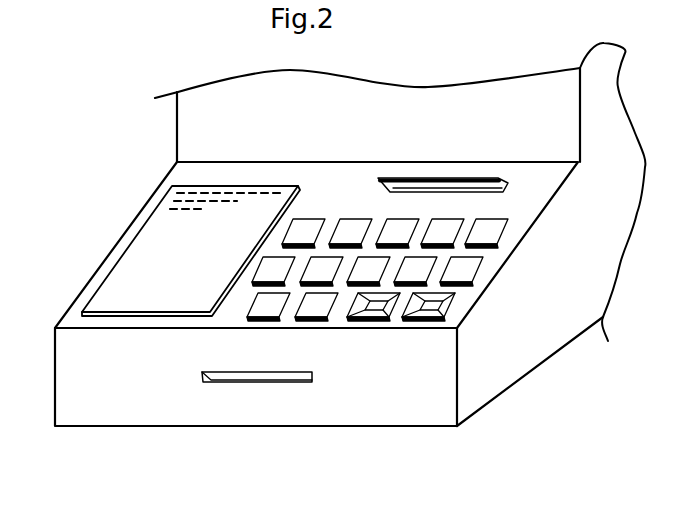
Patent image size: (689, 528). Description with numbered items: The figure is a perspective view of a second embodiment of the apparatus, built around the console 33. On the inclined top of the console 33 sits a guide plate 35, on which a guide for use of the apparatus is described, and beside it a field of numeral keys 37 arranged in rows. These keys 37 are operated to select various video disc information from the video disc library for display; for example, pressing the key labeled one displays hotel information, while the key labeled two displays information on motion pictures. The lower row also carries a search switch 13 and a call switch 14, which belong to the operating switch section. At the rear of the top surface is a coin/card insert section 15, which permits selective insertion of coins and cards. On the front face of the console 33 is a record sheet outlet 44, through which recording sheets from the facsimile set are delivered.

The console 33 is at (108, 257).
The guide plate 35 is at (138, 230).
The numeral keys 37 is at (347, 218).
The coin/card insert section 15 is at (508, 184).
The search switch 13 is at (363, 321).
The call switch 14 is at (422, 322).
The record sheet outlet 44 is at (262, 383).